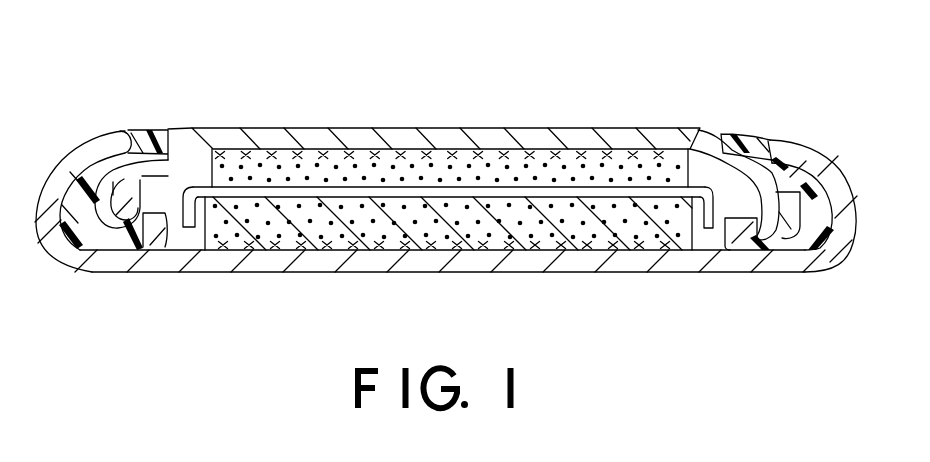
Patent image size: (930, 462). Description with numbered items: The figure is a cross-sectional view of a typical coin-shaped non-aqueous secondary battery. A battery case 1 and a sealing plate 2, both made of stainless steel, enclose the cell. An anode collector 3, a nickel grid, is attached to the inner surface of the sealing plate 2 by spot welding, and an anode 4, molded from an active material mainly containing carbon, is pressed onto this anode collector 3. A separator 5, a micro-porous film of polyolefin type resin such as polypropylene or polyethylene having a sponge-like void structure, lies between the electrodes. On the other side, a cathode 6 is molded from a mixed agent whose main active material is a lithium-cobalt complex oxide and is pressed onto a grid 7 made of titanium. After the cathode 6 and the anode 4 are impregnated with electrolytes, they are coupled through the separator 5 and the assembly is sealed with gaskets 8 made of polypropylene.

The battery case 1 is at (78, 143).
The sealing plate 2 is at (195, 130).
The anode collector 3 is at (391, 155).
The anode 4 is at (467, 160).
The separator 5 is at (513, 187).
The cathode 6 is at (390, 228).
The grid 7 is at (580, 240).
The gaskets 8 is at (732, 131).